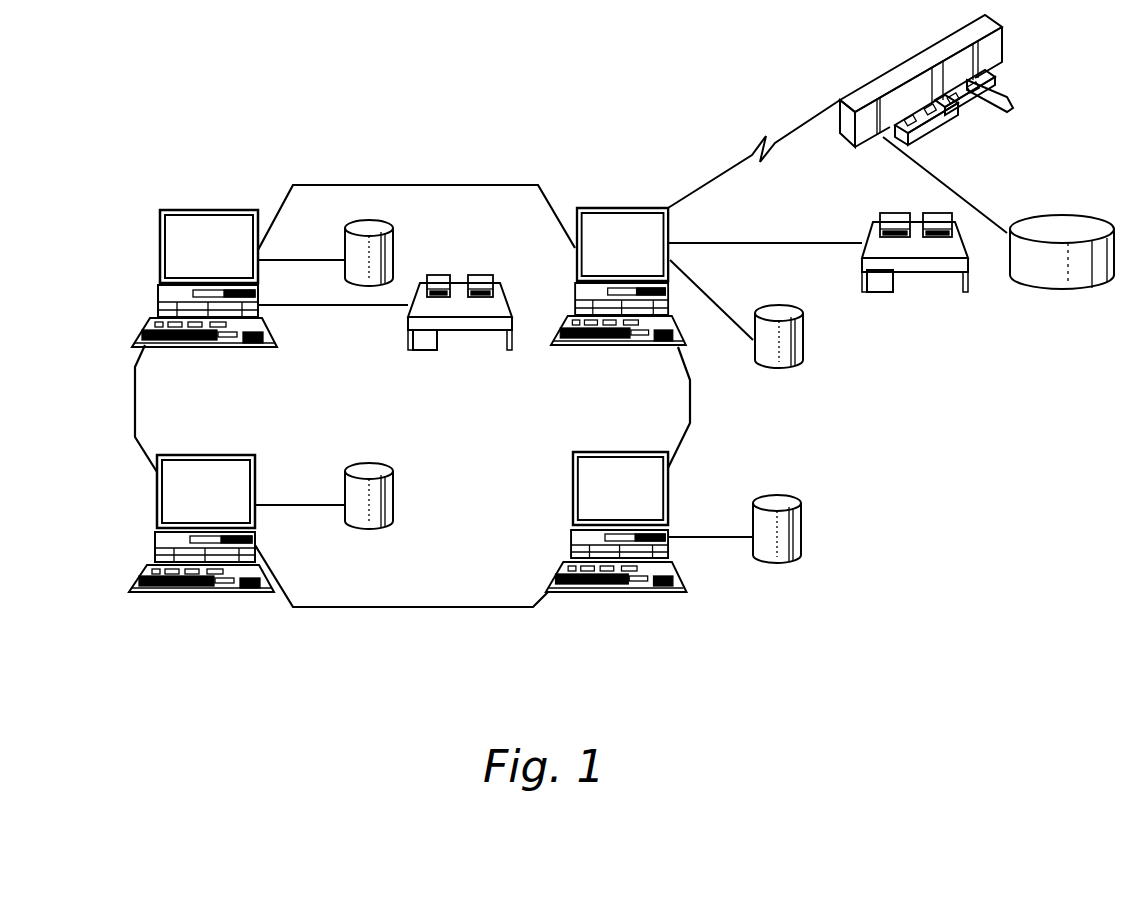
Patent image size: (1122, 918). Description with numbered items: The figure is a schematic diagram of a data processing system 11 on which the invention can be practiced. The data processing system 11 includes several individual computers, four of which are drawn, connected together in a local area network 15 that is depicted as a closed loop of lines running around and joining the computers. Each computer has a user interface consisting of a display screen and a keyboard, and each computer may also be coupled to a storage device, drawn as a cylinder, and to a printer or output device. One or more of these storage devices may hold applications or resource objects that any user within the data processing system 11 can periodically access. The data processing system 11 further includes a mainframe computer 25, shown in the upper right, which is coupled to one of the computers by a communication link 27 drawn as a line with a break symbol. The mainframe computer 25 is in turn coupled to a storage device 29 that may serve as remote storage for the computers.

The data processing system 11 is at (449, 127).
The local area network 15 is at (443, 608).
The mainframe computer 25 is at (919, 52).
The communication link 27 is at (795, 137).
The storage device 29 is at (1084, 218).